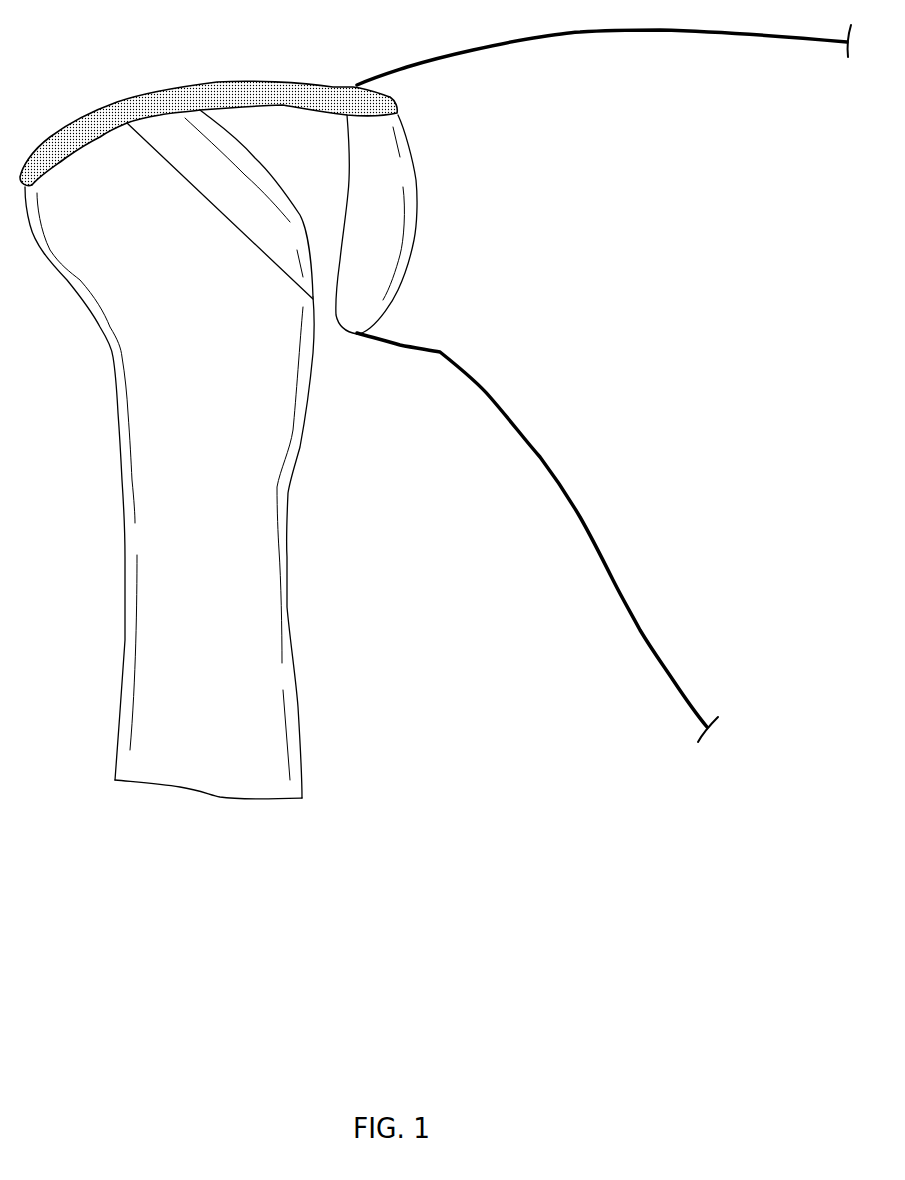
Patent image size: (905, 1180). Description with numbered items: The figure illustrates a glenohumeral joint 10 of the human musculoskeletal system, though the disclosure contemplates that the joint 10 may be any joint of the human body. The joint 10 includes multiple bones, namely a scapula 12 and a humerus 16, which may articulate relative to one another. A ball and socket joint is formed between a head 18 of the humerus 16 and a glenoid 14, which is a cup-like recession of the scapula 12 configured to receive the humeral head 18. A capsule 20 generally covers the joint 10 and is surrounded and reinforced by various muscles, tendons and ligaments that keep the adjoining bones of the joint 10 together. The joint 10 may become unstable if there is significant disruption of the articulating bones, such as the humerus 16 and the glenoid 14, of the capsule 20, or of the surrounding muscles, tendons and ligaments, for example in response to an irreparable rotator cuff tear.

The glenohumeral joint 10 is at (328, 320).
The scapula 12 is at (526, 221).
The glenoid 14 is at (393, 168).
The humerus 16 is at (145, 538).
The head 18 is at (277, 237).
The capsule 20 is at (177, 66).